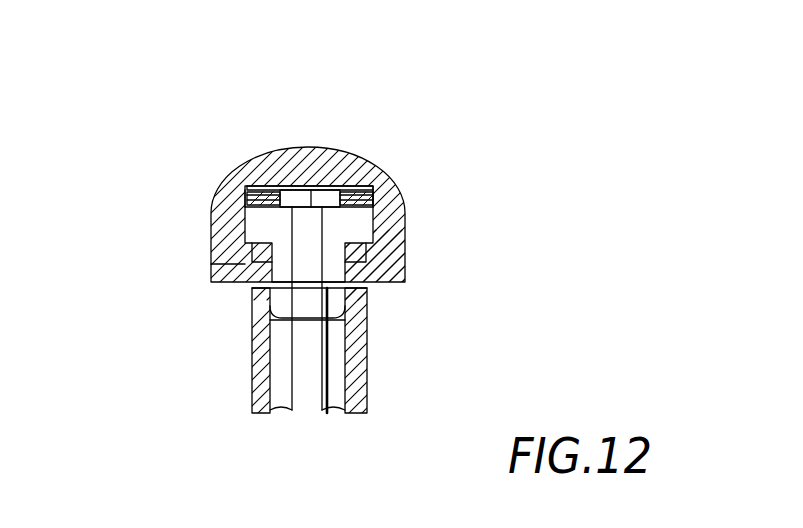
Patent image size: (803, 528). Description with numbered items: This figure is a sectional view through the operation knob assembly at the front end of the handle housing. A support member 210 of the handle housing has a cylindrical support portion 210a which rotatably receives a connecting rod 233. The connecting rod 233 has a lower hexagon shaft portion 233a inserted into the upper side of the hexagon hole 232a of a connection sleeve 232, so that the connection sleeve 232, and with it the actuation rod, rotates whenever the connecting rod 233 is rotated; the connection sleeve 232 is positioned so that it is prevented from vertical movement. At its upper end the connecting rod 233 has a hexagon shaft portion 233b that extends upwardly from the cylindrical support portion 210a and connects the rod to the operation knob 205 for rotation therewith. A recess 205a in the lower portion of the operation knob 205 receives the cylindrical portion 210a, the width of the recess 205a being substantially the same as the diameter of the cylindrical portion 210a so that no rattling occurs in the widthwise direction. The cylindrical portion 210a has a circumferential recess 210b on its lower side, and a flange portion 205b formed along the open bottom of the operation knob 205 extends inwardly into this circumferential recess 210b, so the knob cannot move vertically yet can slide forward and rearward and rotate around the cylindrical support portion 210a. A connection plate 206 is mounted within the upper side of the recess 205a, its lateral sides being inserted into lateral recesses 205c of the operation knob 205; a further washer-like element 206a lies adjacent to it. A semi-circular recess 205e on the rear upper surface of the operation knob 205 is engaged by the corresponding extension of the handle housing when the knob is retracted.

The support member 210 is at (405, 275).
The cylindrical support portion 210a is at (367, 225).
The circumferential recess 210b is at (240, 245).
The operation knob 205 is at (335, 188).
The recess 205a is at (240, 197).
The flange portion 205b is at (235, 268).
The lateral recesses 205c is at (253, 195).
The semi-circular recess 205e is at (320, 187).
The connection plate 206 is at (360, 188).
The washer portion 206a is at (275, 188).
The connecting rod 233 is at (310, 255).
The hexagon shaft portion 233a is at (300, 303).
The hexagon shaft portion 233b is at (297, 193).
The connection sleeve 232 is at (367, 383).
The hexagon hole 232a is at (352, 350).